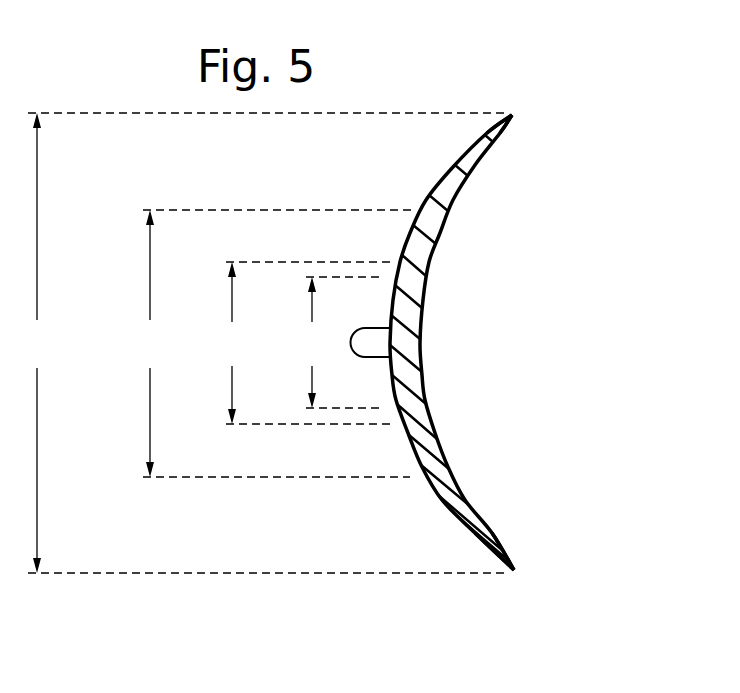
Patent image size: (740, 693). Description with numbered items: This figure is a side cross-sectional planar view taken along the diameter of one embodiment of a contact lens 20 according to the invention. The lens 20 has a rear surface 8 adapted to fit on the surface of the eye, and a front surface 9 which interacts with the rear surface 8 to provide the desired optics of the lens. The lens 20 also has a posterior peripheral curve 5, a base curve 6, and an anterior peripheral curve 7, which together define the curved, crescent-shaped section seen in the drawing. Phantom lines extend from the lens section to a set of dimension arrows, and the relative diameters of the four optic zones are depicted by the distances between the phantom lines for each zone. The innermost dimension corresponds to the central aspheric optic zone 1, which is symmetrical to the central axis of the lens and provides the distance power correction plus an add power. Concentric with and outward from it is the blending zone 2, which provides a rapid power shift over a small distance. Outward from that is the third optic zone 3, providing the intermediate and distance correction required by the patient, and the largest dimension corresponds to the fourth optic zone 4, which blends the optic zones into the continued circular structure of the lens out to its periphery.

The central aspheric optic zone 1 is at (340, 342).
The blending zone 2 is at (304, 343).
The third optic zone 3 is at (273, 343).
The fourth optic zone 4 is at (265, 343).
The posterior peripheral curve 5 is at (476, 165).
The base curve 6 is at (423, 307).
The anterior peripheral curve 7 is at (472, 542).
The rear surface 8 is at (425, 378).
The front surface 9 is at (390, 328).
The lens 20 is at (558, 118).